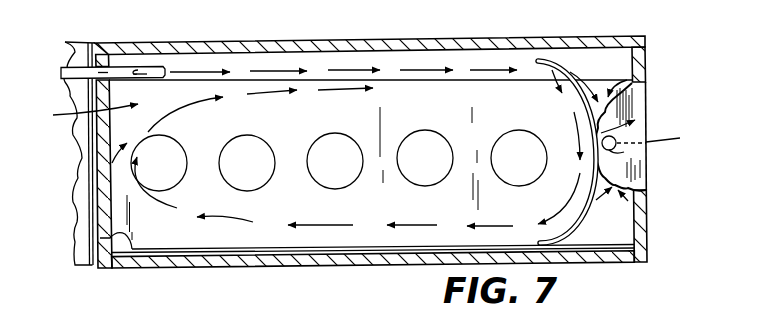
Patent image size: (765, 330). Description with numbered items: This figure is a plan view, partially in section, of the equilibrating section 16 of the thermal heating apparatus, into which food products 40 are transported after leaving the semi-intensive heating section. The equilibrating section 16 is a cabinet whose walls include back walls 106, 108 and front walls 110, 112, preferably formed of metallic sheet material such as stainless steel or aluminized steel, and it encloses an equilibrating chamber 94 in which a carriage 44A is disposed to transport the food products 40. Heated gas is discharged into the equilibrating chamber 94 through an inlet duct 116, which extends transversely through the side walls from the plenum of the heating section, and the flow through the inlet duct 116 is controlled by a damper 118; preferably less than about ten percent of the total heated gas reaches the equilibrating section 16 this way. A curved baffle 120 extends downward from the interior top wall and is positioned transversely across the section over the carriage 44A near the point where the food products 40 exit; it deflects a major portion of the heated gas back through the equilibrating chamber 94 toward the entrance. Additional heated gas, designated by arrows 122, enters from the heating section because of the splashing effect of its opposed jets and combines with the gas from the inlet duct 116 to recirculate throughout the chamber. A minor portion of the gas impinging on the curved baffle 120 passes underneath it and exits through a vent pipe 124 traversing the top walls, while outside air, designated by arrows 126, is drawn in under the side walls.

The equilibrating section 16 is at (60, 103).
The inlet duct 116 is at (108, 46).
The damper 118 is at (134, 74).
The arrows 122 is at (66, 114).
The carriage 44A is at (100, 238).
The front wall 110 is at (205, 249).
The food products 40 is at (243, 173).
The back wall 108 is at (280, 42).
The equilibrating chamber 94 is at (393, 73).
The back wall 106 is at (466, 32).
The curved baffle 120 is at (562, 58).
The vent pipe 124 is at (646, 146).
The arrows 126 is at (674, 73).
The front wall 112 is at (622, 263).